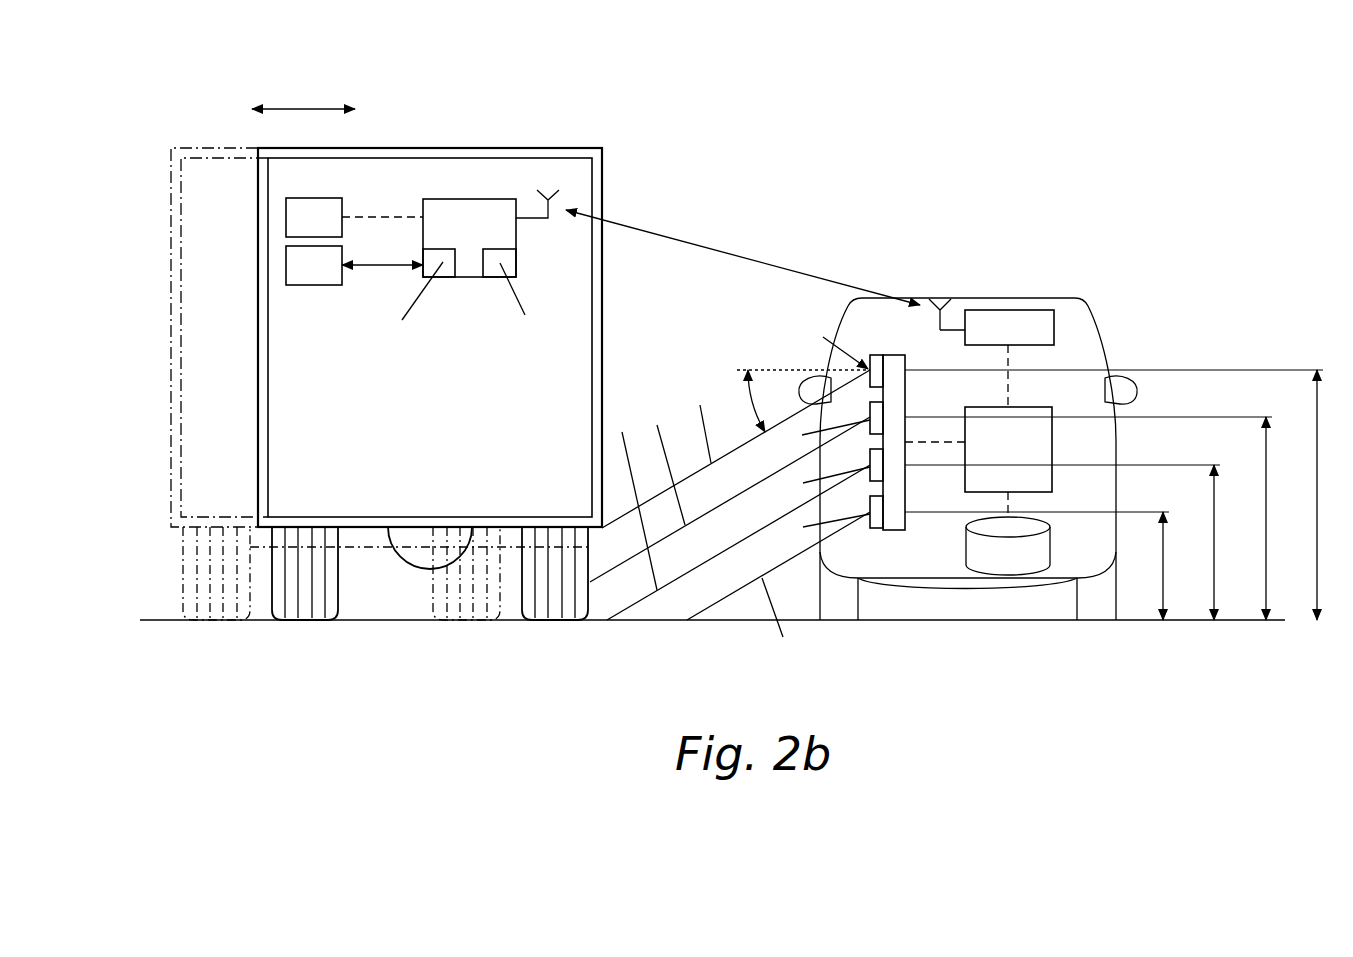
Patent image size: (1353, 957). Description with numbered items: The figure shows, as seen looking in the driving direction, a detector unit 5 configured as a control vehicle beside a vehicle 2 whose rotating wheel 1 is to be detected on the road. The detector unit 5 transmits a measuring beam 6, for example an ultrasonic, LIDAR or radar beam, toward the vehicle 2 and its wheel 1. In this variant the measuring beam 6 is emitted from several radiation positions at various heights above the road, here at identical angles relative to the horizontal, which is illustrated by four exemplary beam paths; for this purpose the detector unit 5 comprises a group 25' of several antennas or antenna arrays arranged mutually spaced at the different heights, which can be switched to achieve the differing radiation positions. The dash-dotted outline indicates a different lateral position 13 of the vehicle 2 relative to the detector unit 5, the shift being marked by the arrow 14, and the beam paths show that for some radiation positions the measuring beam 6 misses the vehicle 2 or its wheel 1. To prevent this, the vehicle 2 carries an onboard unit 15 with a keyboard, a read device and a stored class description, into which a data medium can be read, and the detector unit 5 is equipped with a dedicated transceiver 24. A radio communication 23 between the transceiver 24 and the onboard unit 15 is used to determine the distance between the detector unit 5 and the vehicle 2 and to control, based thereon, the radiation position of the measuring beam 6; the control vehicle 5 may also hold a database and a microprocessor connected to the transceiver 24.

The wheel 1 is at (541, 620).
The vehicle 2 is at (478, 147).
The lateral position 13 is at (217, 150).
The arrow 14 is at (290, 109).
The onboard unit 15 is at (469, 277).
The radio communication 23 is at (698, 242).
The transceiver 24 is at (990, 310).
The detector unit 5 is at (1093, 333).
The measuring beam 6 is at (667, 340).
The group of antennas 25' is at (852, 444).